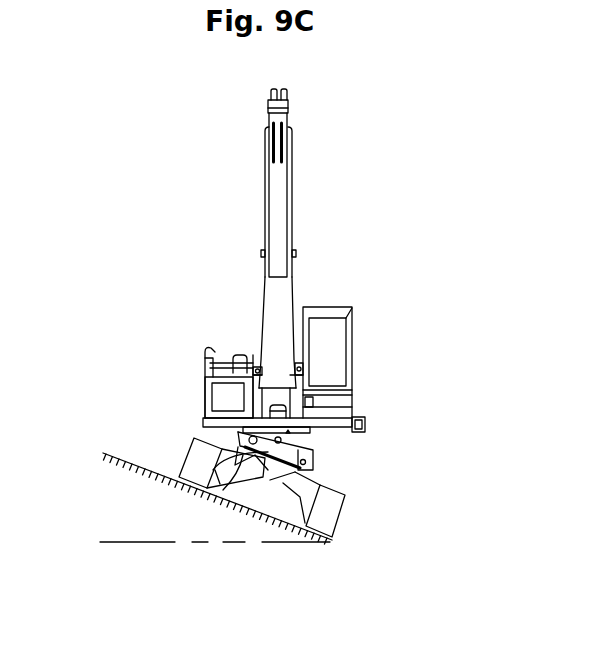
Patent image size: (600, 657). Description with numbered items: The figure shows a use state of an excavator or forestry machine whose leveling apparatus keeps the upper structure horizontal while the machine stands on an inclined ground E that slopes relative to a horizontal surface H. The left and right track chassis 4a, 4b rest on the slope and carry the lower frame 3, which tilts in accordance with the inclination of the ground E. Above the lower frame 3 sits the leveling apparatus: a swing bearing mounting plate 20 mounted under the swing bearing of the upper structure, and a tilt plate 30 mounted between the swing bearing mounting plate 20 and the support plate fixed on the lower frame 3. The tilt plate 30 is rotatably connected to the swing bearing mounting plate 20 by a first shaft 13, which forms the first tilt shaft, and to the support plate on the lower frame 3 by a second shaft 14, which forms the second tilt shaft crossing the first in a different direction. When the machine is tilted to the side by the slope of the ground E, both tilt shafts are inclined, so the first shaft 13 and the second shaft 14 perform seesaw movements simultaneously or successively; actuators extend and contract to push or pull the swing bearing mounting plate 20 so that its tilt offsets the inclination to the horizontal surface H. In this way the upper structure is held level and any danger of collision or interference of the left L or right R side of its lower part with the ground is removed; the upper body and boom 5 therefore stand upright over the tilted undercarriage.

The upper swing structure / machine body 5 is at (320, 420).
The rear or right side R is at (362, 417).
The left side L is at (200, 420).
The inclined ground E is at (129, 462).
The horizontal surface H is at (218, 543).
The swing bearing mounting plate 20 is at (310, 432).
The tilt plate 30 is at (313, 457).
The lower frame 3 is at (253, 509).
The first shaft 13 is at (222, 490).
The second shaft 14 is at (288, 470).
The left track chassis 4a is at (195, 468).
The right track chassis 4b is at (335, 517).